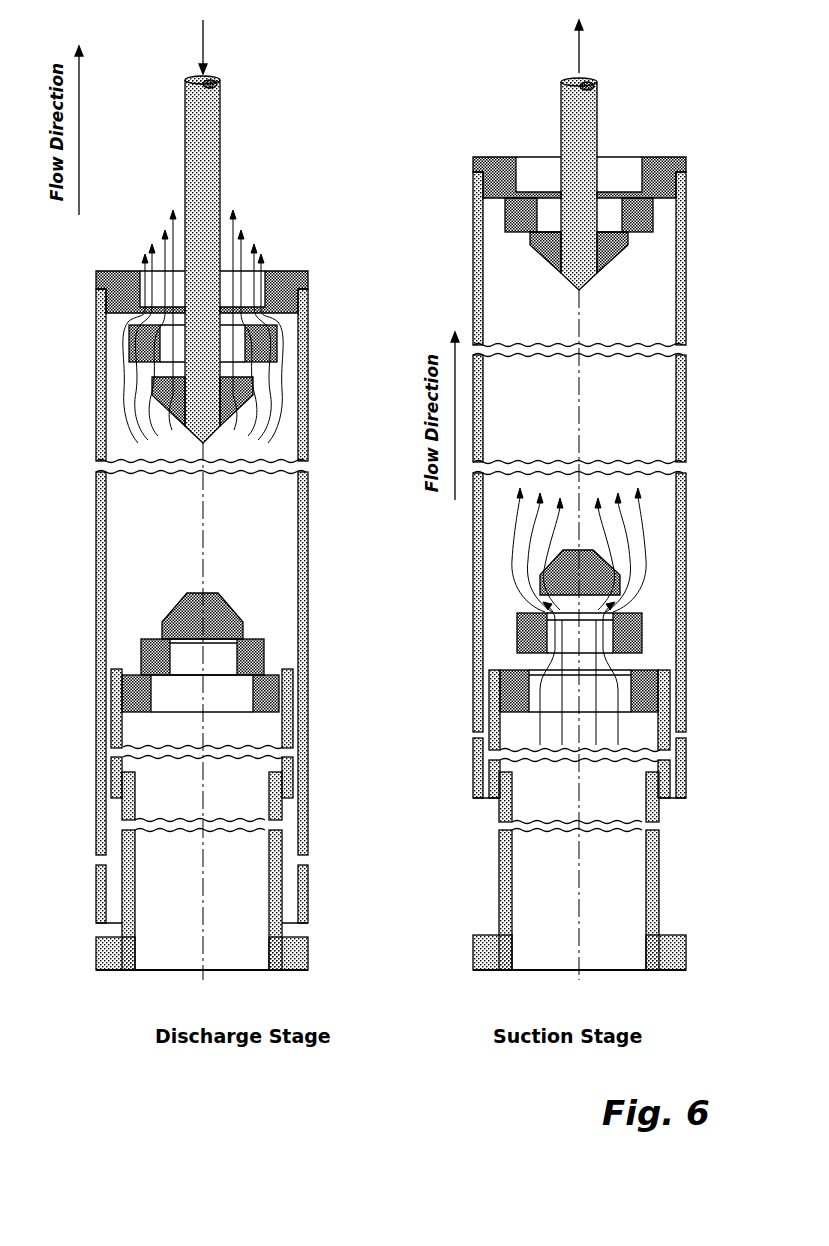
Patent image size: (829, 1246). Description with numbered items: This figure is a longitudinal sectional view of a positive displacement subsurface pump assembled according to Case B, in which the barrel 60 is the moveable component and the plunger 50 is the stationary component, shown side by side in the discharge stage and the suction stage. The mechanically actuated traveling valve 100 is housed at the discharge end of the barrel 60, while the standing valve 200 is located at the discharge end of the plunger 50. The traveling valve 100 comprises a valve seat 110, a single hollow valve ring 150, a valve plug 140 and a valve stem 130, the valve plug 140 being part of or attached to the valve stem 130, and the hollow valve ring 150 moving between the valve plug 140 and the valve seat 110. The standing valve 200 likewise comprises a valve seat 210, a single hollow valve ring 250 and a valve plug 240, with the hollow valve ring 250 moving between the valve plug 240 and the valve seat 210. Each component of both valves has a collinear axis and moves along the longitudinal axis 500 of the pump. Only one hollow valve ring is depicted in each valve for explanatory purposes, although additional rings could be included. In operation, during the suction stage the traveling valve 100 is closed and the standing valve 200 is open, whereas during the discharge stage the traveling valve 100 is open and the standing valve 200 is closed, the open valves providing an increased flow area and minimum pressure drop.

The plunger 50 is at (288, 729).
The barrel 60 is at (305, 512).
The mechanically actuated traveling valve 100 is at (397, 260).
The valve seat 110 is at (285, 278).
The valve stem 130 is at (210, 163).
The valve plug 140 is at (235, 387).
The hollow valve ring 150 is at (262, 344).
The standing valve 200 is at (397, 624).
The valve seat 210 is at (265, 697).
The valve plug 240 is at (215, 626).
The hollow valve ring 250 is at (250, 653).
The longitudinal axis 500 is at (203, 562).